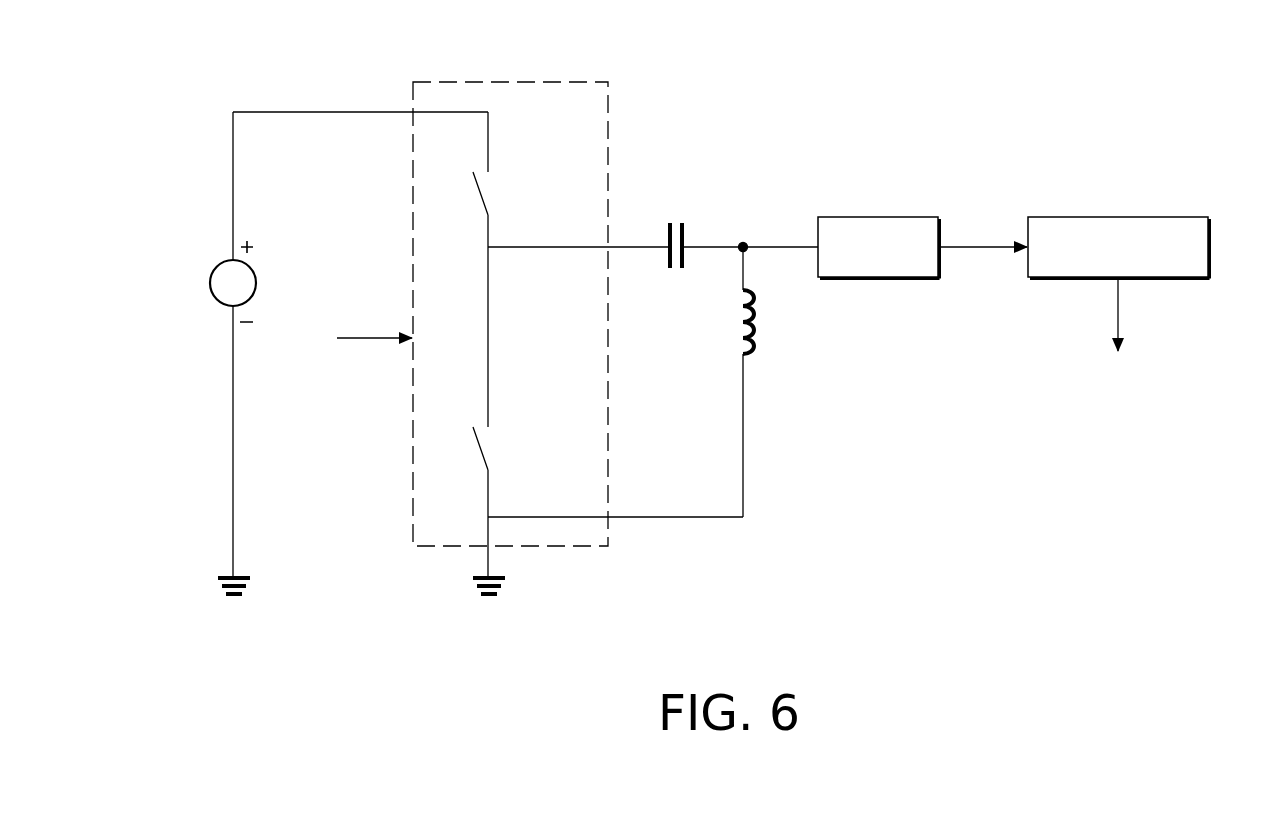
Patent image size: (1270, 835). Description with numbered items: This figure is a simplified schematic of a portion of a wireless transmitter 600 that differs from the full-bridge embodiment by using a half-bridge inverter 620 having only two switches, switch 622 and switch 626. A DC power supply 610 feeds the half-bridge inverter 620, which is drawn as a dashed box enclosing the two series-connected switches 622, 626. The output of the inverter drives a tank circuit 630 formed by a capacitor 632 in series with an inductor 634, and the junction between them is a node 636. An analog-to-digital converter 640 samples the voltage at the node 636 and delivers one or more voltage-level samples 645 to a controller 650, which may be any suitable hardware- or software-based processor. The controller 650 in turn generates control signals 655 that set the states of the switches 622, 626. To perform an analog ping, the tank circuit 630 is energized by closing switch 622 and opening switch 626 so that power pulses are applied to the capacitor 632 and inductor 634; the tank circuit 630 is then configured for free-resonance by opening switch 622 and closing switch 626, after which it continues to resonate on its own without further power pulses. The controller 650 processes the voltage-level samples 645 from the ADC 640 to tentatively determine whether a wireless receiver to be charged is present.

The wireless transmitter 600 is at (928, 712).
The DC power supply 610 is at (210, 285).
The half-bridge inverter 620 is at (556, 82).
The switch 622 is at (497, 198).
The switch 626 is at (497, 446).
The tank circuit 630 is at (751, 375).
The capacitor 632 is at (672, 223).
The inductor 634 is at (766, 325).
The node 636 is at (744, 242).
The analog-to-digital converter (ADC) 640 is at (887, 217).
The voltage-level samples 645 is at (975, 247).
The controller 650 is at (1147, 217).
The control signals 655 is at (368, 336).